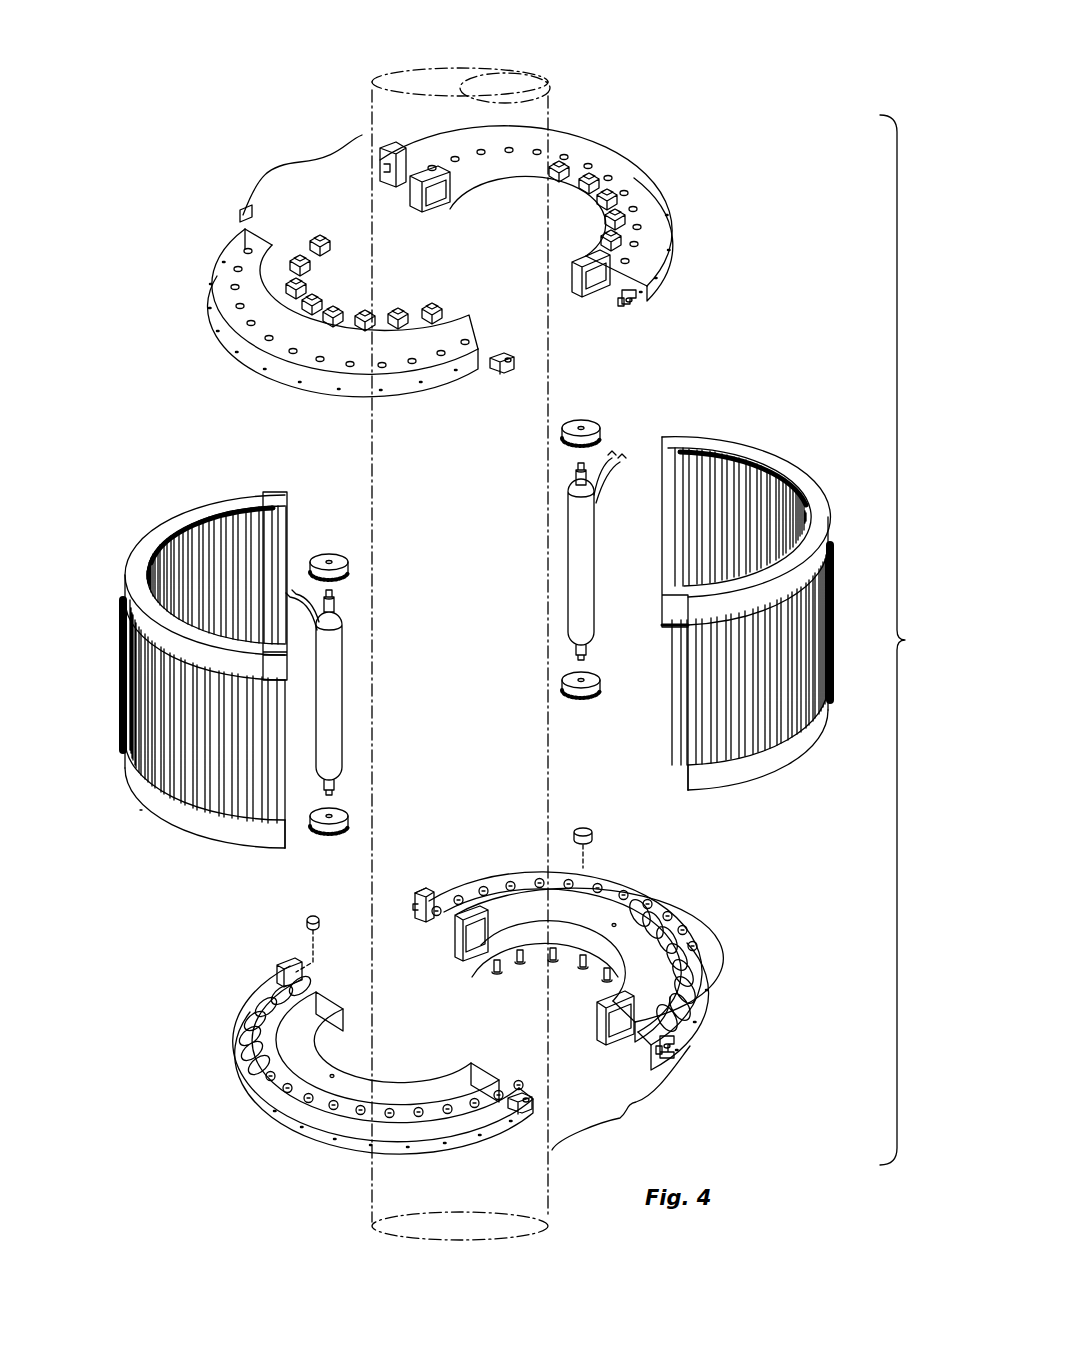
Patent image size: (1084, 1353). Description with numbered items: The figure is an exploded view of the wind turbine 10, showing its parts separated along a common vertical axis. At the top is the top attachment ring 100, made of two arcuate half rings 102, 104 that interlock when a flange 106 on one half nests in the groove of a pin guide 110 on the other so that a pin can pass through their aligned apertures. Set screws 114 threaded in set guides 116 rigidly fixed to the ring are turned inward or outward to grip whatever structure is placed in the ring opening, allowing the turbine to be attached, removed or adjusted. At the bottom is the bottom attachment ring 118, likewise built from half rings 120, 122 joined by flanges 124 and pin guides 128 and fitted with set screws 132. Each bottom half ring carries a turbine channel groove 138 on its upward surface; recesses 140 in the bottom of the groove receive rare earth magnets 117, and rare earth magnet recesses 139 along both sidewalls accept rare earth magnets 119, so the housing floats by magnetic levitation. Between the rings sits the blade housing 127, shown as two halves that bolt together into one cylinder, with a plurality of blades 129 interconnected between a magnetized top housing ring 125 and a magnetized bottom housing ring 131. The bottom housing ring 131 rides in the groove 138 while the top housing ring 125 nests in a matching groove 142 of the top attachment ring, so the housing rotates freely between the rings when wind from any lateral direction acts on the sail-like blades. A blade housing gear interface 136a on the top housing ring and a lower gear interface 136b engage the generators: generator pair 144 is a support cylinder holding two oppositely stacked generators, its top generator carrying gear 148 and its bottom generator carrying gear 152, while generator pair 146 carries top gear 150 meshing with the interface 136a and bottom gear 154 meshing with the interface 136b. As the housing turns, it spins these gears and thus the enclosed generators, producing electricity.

The wind turbine 10 is at (911, 640).
The top attachment ring 100 is at (302, 169).
The half ring 102 is at (662, 218).
The half ring 104 is at (212, 330).
The flange 106 is at (508, 375).
The pin guide 110 is at (638, 310).
The set screw 114 is at (560, 168).
The set guide 116 is at (590, 196).
The rare earth magnet 117 is at (592, 832).
The bottom attachment ring 118 is at (621, 1099).
The rare earth magnet 119 is at (306, 920).
The half ring 120 is at (690, 925).
The half ring 122 is at (300, 1122).
The flange 124 is at (528, 1120).
The top housing ring 125 is at (182, 498).
The blade housing 127 is at (216, 830).
The pin guide 128 is at (680, 1054).
The blade 129 is at (120, 640).
The bottom housing ring 131 is at (168, 800).
The set screw 132 is at (521, 962).
The blade housing gear interface 136a is at (266, 506).
The lower gear interface 136b is at (672, 628).
The turbine channel groove 138 is at (690, 987).
The rare earth magnet recess 139 is at (612, 884).
The recess 140 is at (480, 884).
The groove 142 is at (604, 296).
The generator pair 144 is at (342, 742).
The generator pair 146 is at (568, 602).
The gear 148 is at (331, 556).
The gear 150 is at (582, 420).
The gear 152 is at (330, 836).
The gear 154 is at (596, 696).